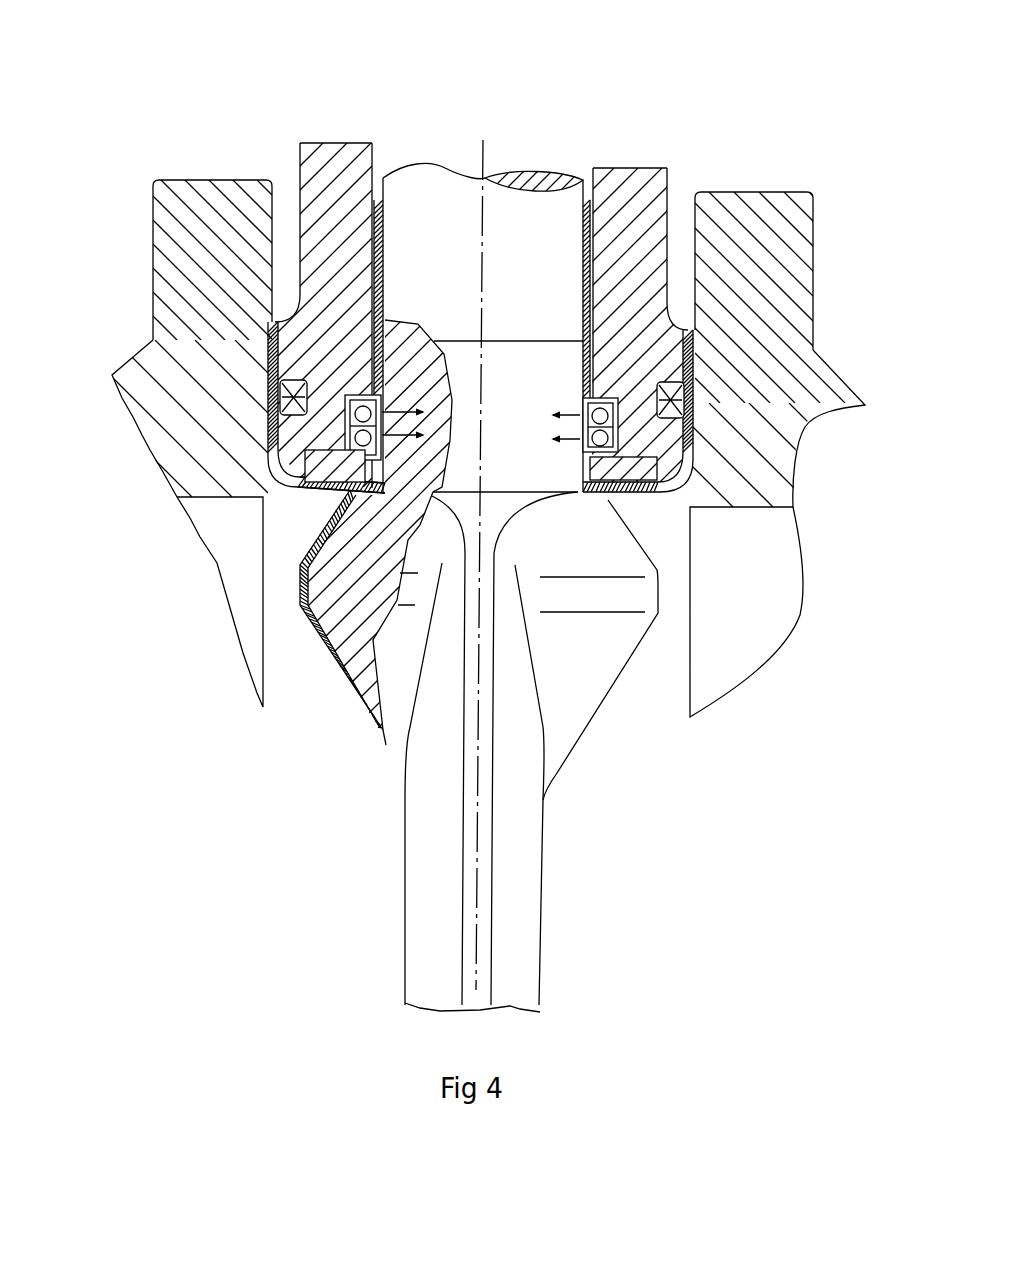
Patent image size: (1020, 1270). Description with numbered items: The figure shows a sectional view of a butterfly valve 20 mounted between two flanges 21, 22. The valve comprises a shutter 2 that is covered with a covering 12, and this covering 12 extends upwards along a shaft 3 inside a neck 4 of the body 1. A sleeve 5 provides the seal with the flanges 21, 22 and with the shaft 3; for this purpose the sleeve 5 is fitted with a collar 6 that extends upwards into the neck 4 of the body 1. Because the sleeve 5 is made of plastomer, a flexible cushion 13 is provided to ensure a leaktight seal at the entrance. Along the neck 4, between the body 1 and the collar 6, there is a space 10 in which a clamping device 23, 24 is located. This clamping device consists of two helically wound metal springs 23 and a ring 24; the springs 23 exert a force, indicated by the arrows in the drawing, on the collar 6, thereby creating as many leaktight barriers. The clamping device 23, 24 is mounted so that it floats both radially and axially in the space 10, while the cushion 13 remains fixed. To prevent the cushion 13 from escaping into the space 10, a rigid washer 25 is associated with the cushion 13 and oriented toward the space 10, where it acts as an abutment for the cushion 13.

The body 1 is at (645, 264).
The shutter 2 is at (430, 888).
The shaft 3 is at (515, 222).
The neck 4 is at (408, 157).
The sleeve 5 is at (335, 452).
The collar 6 is at (348, 482).
The space 10 is at (345, 400).
The covering 12 is at (355, 700).
The flexible cushion 13 is at (615, 500).
The butterfly valve 20 is at (628, 135).
The flange 21 is at (743, 208).
The flange 22 is at (228, 195).
The helically wound metal springs 23 is at (300, 388).
The ring 24 is at (350, 423).
The rigid washer 25 is at (612, 462).